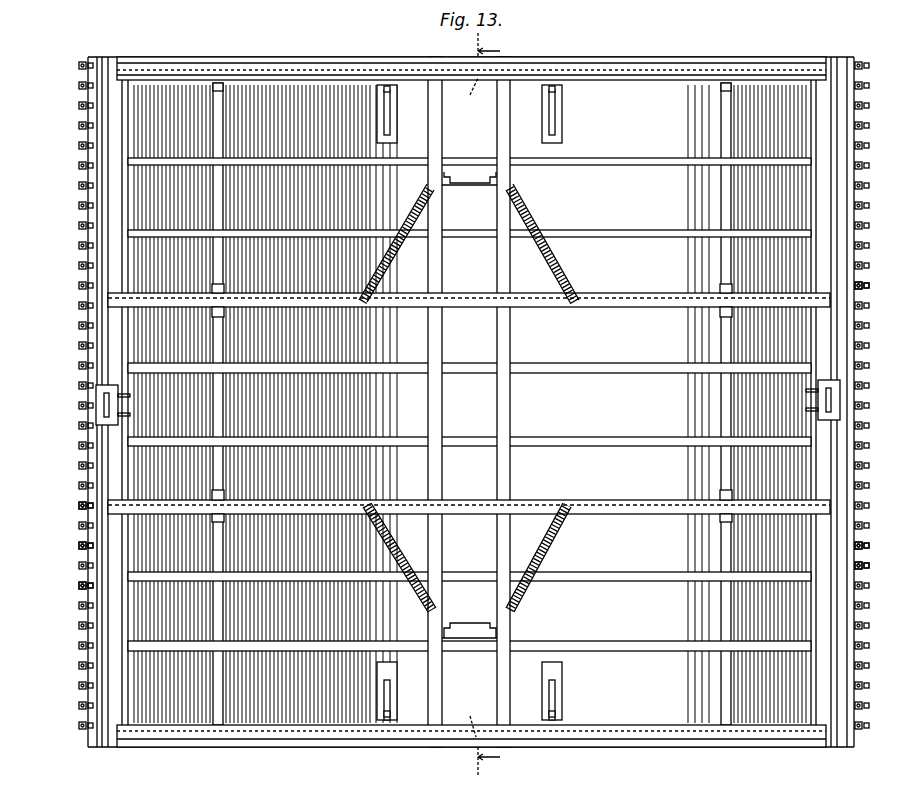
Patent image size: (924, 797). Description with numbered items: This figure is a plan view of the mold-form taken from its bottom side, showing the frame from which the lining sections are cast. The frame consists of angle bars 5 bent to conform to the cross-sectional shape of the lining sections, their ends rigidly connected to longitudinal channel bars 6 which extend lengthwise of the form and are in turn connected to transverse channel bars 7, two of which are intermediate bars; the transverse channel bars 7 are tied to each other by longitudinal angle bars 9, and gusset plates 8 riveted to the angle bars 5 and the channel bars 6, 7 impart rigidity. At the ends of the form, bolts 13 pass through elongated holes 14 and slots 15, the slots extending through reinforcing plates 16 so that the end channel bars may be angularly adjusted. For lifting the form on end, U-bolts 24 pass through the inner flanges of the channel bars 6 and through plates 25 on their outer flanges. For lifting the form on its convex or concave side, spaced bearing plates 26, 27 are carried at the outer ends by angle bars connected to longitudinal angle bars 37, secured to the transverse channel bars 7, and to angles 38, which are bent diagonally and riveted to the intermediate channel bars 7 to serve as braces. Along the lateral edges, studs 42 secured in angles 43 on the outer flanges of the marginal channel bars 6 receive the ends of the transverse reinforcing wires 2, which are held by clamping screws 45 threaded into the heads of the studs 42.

The transverse reinforcing wires 2 is at (80, 324).
The angle bars 5 is at (602, 228).
The channel bars 6 is at (122, 628).
The transverse channel bars 7 is at (633, 60).
The gusset plates 8 is at (157, 310).
The longitudinal angle bars 9 is at (223, 405).
The bolts 13 is at (392, 91).
The elongated holes 14 is at (491, 406).
The slots 15 is at (390, 117).
The reinforcing plates 16 is at (210, 92).
The U-bolts 24 is at (104, 412).
The plates 25 is at (104, 399).
The bearing plate 26 is at (467, 407).
The bearing plate 27 is at (478, 187).
The longitudinal angle bars 37 is at (391, 262).
The angles 38 is at (566, 262).
The studs 42 is at (80, 542).
The angles 43 is at (80, 548).
The clamping screws 45 is at (80, 618).